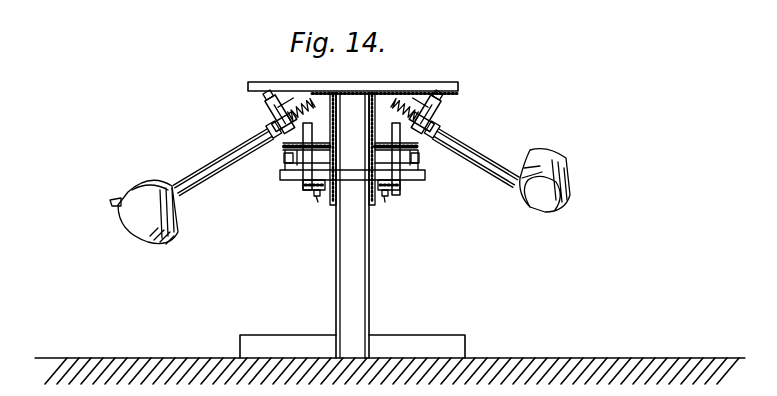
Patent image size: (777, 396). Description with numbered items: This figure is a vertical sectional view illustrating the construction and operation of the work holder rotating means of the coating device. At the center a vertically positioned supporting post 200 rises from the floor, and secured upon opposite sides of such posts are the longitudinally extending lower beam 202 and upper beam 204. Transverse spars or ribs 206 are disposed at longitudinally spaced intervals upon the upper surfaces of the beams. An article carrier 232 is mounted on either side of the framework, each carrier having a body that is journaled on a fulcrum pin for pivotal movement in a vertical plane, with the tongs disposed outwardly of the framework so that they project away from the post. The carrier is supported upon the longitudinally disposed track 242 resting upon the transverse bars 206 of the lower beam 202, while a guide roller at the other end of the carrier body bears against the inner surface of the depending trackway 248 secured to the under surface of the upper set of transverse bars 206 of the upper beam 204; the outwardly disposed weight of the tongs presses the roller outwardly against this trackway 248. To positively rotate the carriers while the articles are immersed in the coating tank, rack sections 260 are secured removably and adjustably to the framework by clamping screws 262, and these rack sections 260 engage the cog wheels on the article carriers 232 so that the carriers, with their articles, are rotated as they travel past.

The supporting post 200 is at (353, 248).
The lower beam 202 is at (373, 192).
The upper beam 204 is at (380, 83).
The transverse spar 206 is at (421, 91).
The article carrier 232 is at (265, 163).
The longitudinally disposed track 242 is at (423, 177).
The depending trackway 248 is at (265, 97).
The rack section 260 is at (398, 164).
The clamping screw 262 is at (318, 202).